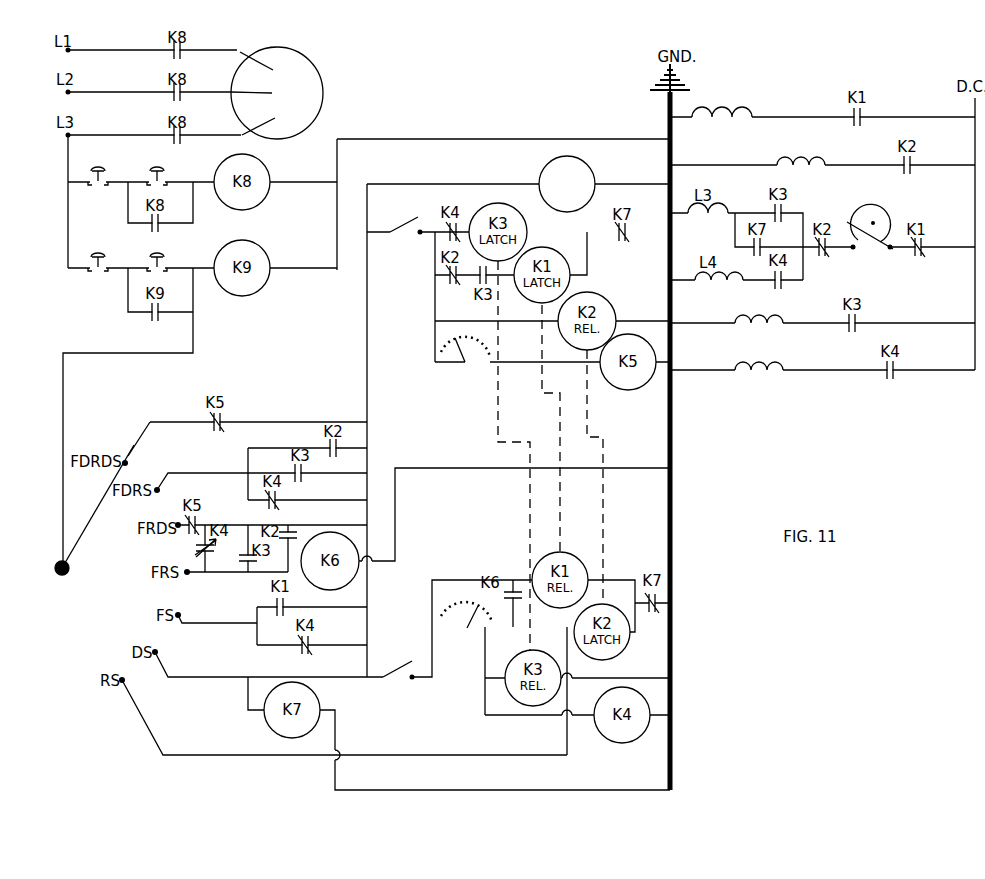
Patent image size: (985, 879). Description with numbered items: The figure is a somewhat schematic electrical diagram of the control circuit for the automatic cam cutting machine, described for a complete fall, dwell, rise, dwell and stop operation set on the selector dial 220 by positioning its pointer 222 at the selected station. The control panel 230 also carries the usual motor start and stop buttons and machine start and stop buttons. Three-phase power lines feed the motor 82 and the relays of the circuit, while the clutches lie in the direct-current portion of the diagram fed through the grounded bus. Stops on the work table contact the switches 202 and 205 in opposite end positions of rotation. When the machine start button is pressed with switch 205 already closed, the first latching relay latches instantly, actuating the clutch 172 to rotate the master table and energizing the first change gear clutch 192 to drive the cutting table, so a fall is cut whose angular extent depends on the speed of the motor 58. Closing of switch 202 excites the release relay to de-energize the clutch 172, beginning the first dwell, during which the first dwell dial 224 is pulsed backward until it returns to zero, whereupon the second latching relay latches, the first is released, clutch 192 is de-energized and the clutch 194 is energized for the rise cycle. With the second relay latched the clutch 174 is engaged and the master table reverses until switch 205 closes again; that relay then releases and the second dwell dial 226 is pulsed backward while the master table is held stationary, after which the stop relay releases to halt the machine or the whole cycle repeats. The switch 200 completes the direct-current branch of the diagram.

The motor 82 is at (320, 82).
The control panel 230 is at (127, 207).
The motor 58 is at (567, 184).
The switch 205 is at (418, 218).
The second dwell dial 226 is at (465, 340).
The clutch 172 is at (722, 103).
The clutch 174 is at (801, 151).
The thermostatic switch 200 is at (874, 220).
The first change gear clutch 192 is at (759, 309).
The clutch 194 is at (759, 356).
The selector dial 220 is at (93, 513).
The pointer 222 is at (148, 570).
The first dwell dial 224 is at (466, 606).
The switch 202 is at (398, 659).